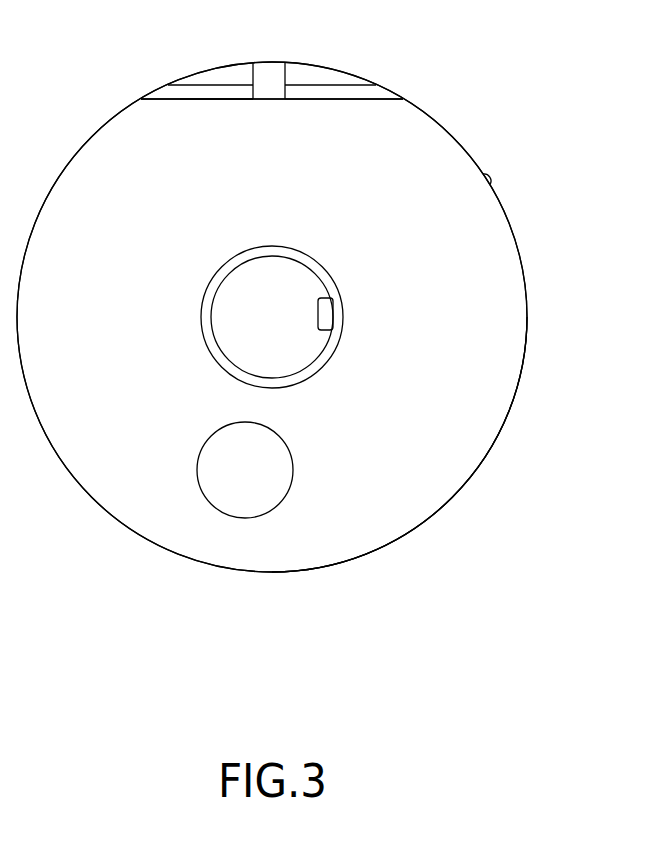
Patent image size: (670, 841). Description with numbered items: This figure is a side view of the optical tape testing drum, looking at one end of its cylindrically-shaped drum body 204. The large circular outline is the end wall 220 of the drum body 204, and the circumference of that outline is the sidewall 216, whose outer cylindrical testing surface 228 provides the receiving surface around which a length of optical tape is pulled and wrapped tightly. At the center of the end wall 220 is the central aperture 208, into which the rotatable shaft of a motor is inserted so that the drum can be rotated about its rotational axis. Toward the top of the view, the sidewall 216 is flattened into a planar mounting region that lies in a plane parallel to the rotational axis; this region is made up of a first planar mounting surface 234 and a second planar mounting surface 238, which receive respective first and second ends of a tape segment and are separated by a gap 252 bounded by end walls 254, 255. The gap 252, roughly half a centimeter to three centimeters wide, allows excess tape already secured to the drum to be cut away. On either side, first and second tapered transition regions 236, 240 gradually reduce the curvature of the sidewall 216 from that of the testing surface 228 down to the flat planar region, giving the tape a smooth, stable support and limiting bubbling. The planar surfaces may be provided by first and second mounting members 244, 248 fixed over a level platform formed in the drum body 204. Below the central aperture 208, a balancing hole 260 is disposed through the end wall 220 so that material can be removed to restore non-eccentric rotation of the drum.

The drum body 204 is at (349, 556).
The central aperture 208 is at (331, 283).
The sidewall 216 is at (548, 335).
The first end wall 220 is at (465, 448).
The testing surface 228 is at (481, 175).
The first planar mounting surface 234 is at (338, 85).
The first tapered transition region 236 is at (395, 92).
The second planar mounting surface 238 is at (205, 85).
The second tapered transition region 240 is at (144, 98).
The first mounting member 244 is at (298, 97).
The second mounting member 248 is at (238, 100).
The gap 252 is at (270, 100).
The first end wall of gap 254 is at (254, 63).
The second end wall of gap 255 is at (286, 63).
The balancing hole 260 is at (236, 518).